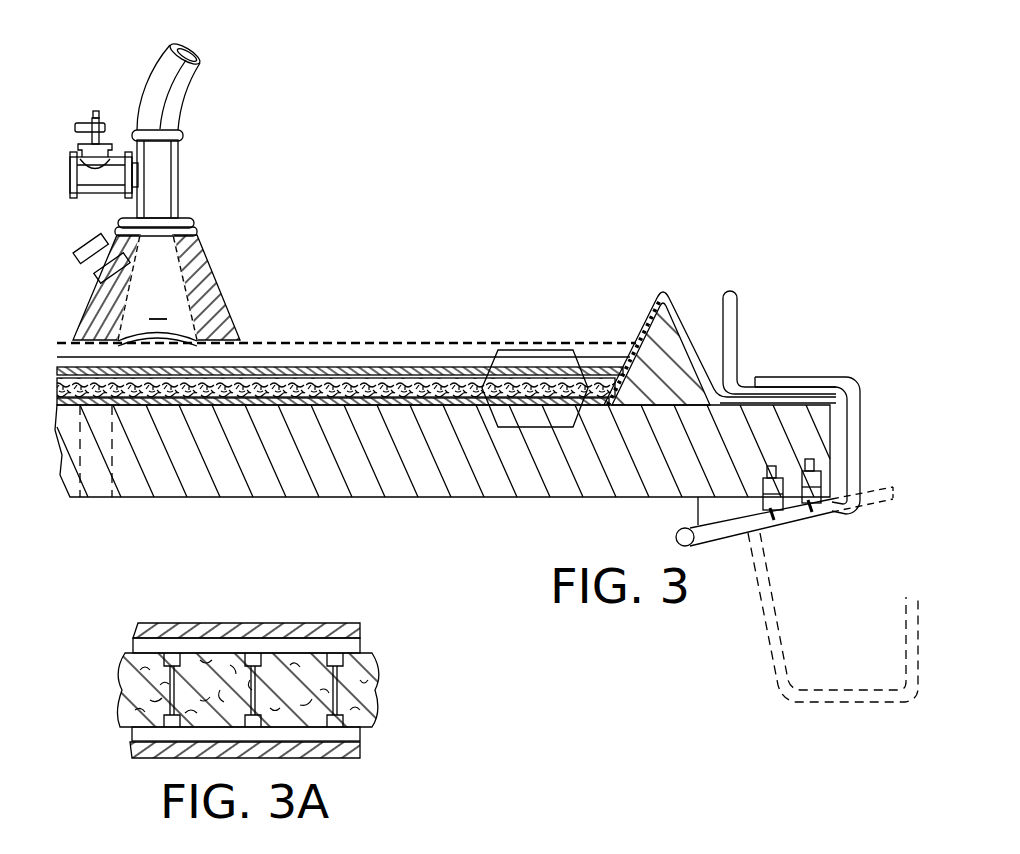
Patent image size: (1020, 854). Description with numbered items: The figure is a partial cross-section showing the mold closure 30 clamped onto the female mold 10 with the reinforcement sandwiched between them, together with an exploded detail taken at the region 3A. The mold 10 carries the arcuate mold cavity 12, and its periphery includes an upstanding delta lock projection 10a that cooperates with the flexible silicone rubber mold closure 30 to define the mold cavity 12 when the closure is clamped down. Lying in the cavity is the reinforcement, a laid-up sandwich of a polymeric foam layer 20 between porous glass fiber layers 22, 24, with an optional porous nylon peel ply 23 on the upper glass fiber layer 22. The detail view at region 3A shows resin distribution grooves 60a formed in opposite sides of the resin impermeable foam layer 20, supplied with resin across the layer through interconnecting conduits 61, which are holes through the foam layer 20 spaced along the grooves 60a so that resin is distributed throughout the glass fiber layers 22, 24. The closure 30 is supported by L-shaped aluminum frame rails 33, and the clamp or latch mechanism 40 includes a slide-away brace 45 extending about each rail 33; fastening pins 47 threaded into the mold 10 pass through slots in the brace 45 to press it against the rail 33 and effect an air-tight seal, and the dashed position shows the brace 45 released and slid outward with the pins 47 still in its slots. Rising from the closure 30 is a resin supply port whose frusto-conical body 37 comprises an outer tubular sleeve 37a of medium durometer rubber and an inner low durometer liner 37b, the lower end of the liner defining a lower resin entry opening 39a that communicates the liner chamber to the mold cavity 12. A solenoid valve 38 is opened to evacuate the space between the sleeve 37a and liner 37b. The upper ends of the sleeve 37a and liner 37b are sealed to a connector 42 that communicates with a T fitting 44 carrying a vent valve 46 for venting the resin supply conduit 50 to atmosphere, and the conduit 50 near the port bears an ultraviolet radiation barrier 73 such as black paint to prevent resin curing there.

In FIG. 3, the female mold 10 is at (140, 482).
In FIG. 3, the mold periphery with upstanding delta lock projection 10a is at (634, 346).
In FIG. 3, the mold cavity 12 is at (632, 344).
In FIG. 3, the polymeric foam layer 20 is at (373, 385).
In FIG. 3A, the polymeric foam layer 20 is at (379, 692).
In FIG. 3, the upper glass fiber layer 22 is at (347, 365).
In FIG. 3A, the upper glass fiber layer 22 is at (262, 622).
In FIG. 3, the peel ply 23 is at (340, 355).
In FIG. 3, the lower glass fiber layer 24 is at (400, 400).
In FIG. 3A, the lower glass fiber layer 24 is at (335, 760).
In FIG. 3, the mold closure 30 is at (330, 341).
In FIG. 3, the frame rail 33 is at (740, 314).
In FIG. 3, the frusto-conical port body 37 is at (173, 270).
In FIG. 3, the outer tubular sleeve 37a is at (90, 318).
In FIG. 3, the inner liner 37b is at (140, 283).
In FIG. 3, the solenoid valve 38 is at (97, 238).
In FIG. 3, the lower resin entry opening 39a is at (163, 335).
In FIG. 3, the clamp or latch mechanism 40 is at (868, 382).
In FIG. 3, the connector 42 is at (190, 216).
In FIG. 3, the T fitting 44 is at (185, 162).
In FIG. 3, the slide-away brace 45 is at (792, 369).
In FIG. 3, the vent valve 46 is at (77, 146).
In FIG. 3, the fastening pins 47 is at (818, 522).
In FIG. 3, the resin supply conduit 50 is at (205, 50).
In FIG. 3A, the resin distribution grooves 60a is at (340, 660).
In FIG. 3A, the interconnecting resin conduits 61 is at (177, 688).
In FIG. 3, the ultraviolet radiation barrier 73 is at (142, 86).
In FIG. 3, the region 3A is at (497, 430).